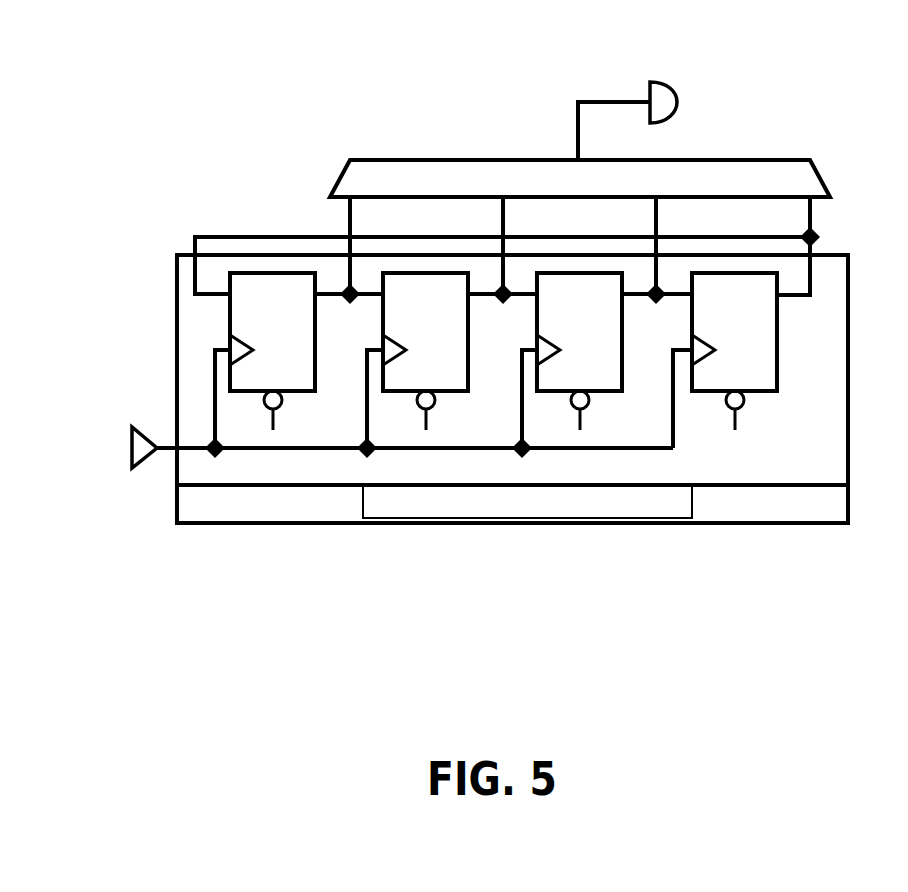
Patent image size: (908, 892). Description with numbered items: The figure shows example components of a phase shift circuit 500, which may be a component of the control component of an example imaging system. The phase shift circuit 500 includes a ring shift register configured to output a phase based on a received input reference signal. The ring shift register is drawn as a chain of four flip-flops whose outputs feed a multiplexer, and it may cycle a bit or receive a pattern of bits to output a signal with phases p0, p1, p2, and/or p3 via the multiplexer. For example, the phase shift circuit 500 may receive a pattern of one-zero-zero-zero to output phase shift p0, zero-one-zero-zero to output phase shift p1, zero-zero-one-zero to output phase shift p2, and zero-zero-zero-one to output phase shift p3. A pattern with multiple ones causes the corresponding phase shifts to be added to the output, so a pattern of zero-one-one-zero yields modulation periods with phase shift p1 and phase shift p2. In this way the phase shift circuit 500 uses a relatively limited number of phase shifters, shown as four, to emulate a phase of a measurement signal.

The phase shift circuit 500 is at (138, 96).
The phase shift p0 is at (366, 250).
The phase shift p1 is at (522, 250).
The phase shift p2 is at (675, 250).
The phase shift p3 is at (821, 246).